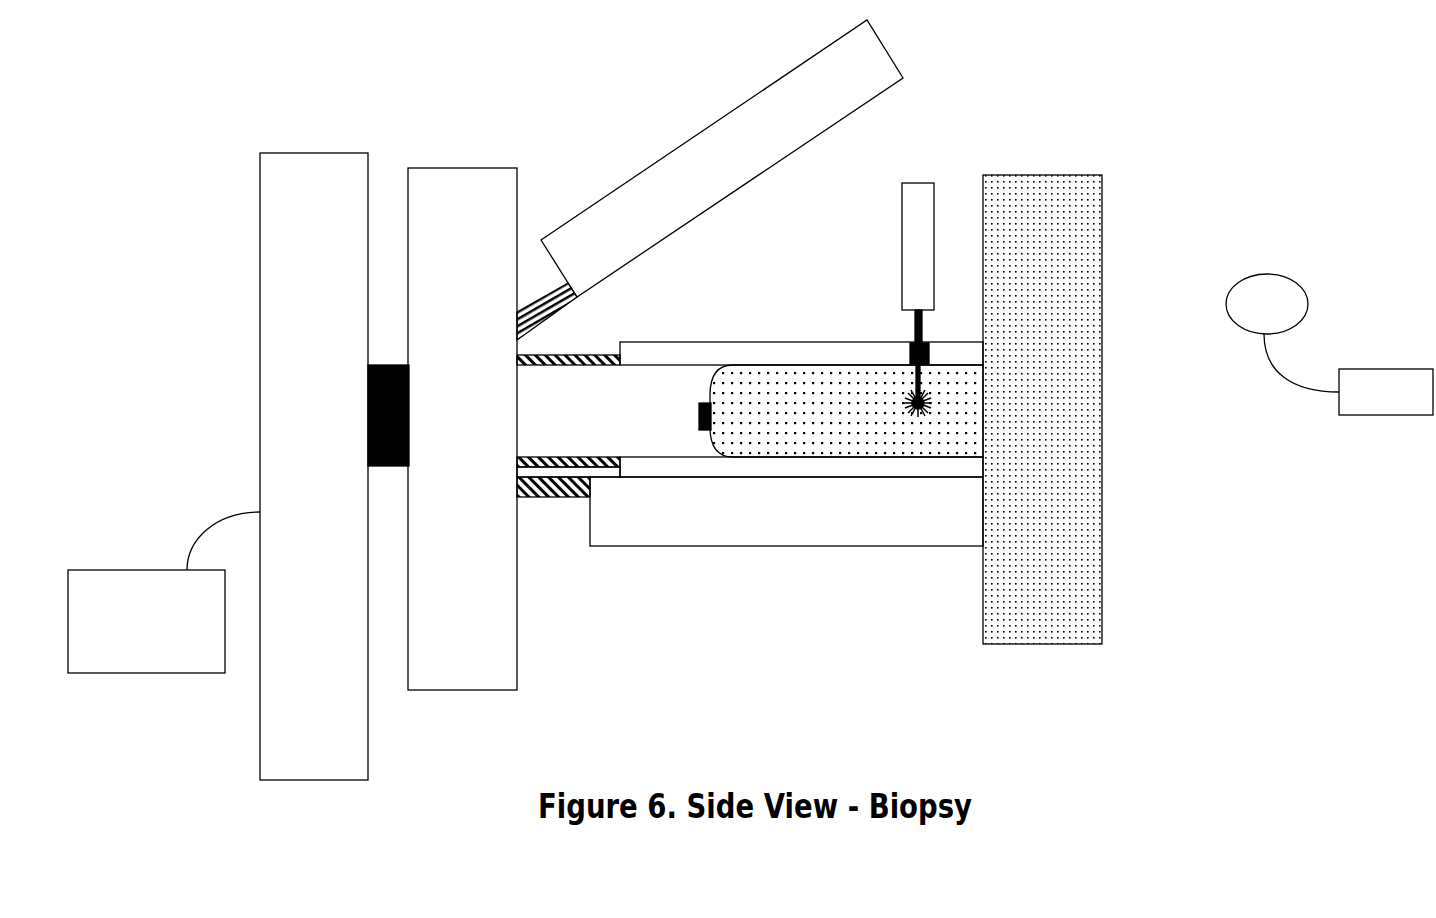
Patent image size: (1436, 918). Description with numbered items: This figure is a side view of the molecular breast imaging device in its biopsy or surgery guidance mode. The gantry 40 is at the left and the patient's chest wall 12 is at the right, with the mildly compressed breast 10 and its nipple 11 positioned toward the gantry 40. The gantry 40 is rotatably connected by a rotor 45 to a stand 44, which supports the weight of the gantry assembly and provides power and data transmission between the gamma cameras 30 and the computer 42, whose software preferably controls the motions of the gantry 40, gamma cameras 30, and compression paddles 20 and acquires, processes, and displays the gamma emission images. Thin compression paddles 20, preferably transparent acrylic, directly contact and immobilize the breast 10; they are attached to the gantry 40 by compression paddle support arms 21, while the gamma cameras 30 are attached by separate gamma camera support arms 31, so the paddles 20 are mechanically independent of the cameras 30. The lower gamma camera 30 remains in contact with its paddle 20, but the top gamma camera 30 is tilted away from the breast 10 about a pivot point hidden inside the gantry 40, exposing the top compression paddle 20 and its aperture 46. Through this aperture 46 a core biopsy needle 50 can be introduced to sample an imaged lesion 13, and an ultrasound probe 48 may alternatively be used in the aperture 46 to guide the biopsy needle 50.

The breast 10 is at (952, 445).
The nipple 11 is at (698, 413).
The chest wall 12 is at (1067, 577).
The lesion 13 is at (930, 407).
The compression paddle 20 is at (673, 352).
The compression paddle support arm 21 is at (572, 410).
The gamma camera 30 is at (837, 87).
The gamma camera support arm 31 is at (553, 315).
The gantry 40 is at (489, 243).
The computer 42 is at (117, 588).
The stand 44 is at (300, 232).
The rotor 45 is at (368, 365).
The aperture 46 is at (928, 350).
The ultrasound probe 48 is at (1247, 285).
The core biopsy needle 50 is at (915, 295).